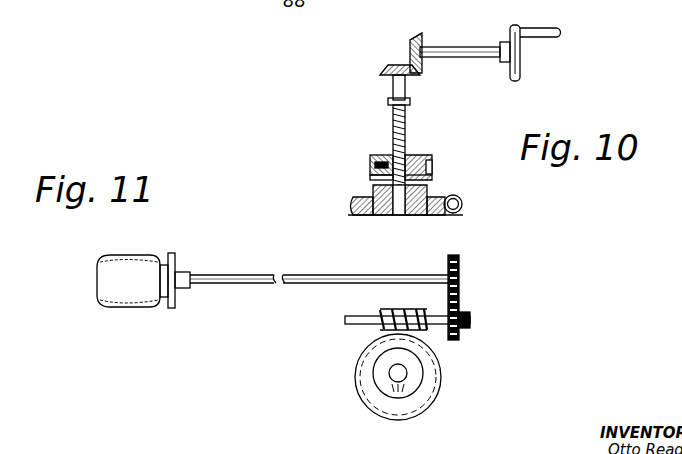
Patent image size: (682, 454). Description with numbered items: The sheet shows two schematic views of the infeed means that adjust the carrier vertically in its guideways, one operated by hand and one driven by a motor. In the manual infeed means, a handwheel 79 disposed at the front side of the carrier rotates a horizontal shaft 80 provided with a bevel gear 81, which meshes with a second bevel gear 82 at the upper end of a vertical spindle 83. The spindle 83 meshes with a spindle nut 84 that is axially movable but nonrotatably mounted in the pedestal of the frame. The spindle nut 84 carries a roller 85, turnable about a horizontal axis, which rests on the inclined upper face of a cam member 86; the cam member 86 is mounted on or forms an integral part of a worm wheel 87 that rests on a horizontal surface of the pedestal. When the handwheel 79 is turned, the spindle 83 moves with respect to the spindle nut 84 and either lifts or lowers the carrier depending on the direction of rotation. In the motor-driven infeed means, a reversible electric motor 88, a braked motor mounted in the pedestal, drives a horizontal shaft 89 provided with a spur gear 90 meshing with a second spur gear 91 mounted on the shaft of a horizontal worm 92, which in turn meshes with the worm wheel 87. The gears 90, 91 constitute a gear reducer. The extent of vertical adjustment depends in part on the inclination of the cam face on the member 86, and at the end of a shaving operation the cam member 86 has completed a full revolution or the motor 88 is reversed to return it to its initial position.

In FIG. 10, the handwheel 79 is at (519, 59).
In FIG. 10, the horizontal shaft 80 is at (483, 52).
In FIG. 10, the bevel gear 81 is at (410, 45).
In FIG. 10, the second bevel gear 82 is at (383, 71).
In FIG. 10, the vertical spindle 83 is at (392, 122).
In FIG. 10, the spindle nut 84 is at (418, 160).
In FIG. 10, the roller 85 is at (370, 161).
In FIG. 10, the cam member 86 is at (374, 193).
In FIG. 11, the cam member 86 is at (420, 371).
In FIG. 10, the worm wheel 87 is at (440, 204).
In FIG. 11, the worm wheel 87 is at (363, 380).
In FIG. 11, the reversible electric motor 88 is at (145, 295).
In FIG. 11, the horizontal shaft 89 is at (283, 283).
In FIG. 11, the spur gear 90 is at (460, 266).
In FIG. 11, the second spur gear 91 is at (466, 316).
In FIG. 10, the horizontal worm 92 is at (463, 204).
In FIG. 11, the horizontal worm 92 is at (380, 311).